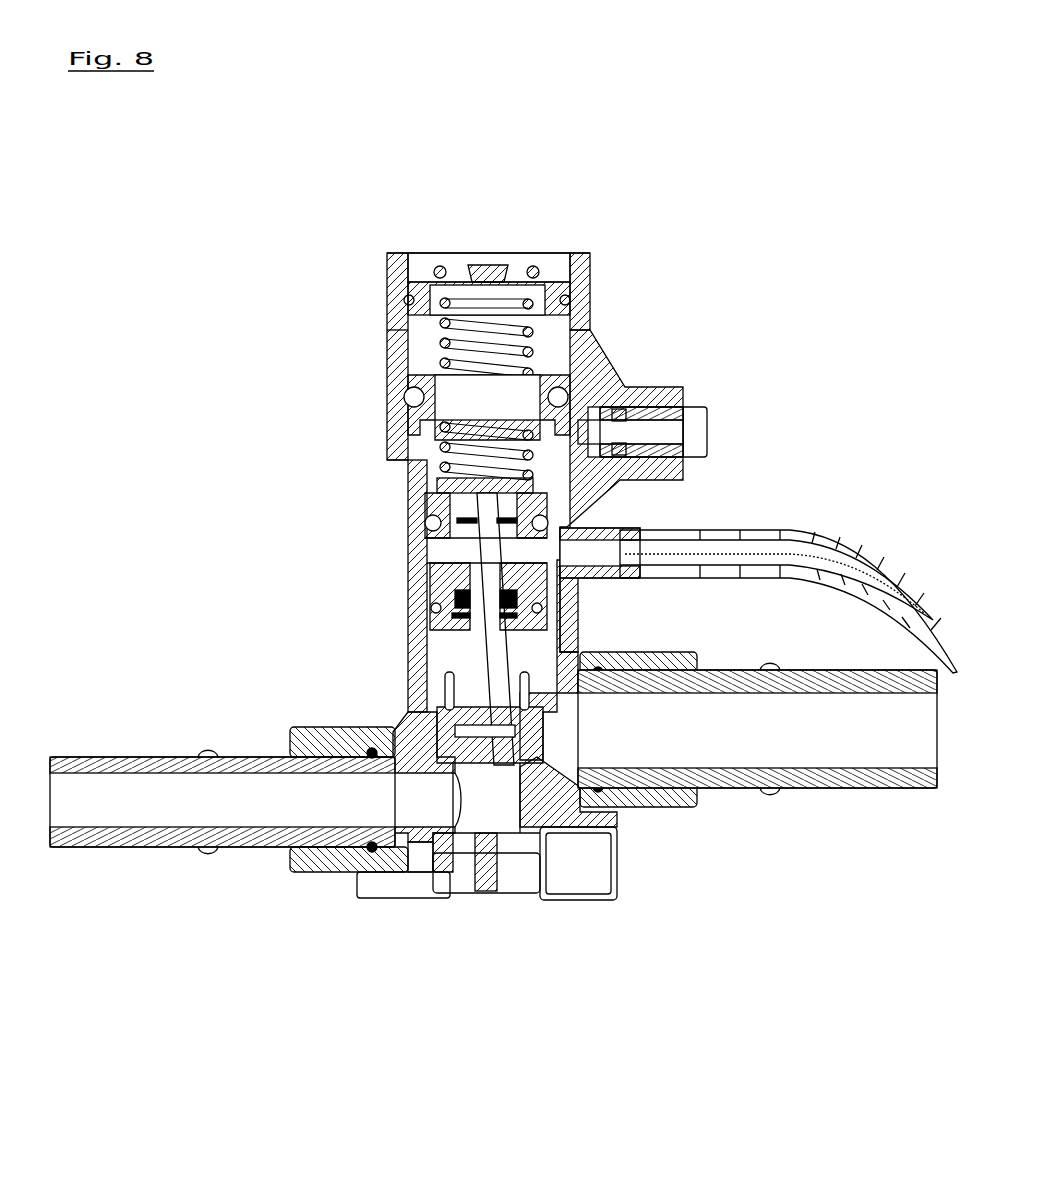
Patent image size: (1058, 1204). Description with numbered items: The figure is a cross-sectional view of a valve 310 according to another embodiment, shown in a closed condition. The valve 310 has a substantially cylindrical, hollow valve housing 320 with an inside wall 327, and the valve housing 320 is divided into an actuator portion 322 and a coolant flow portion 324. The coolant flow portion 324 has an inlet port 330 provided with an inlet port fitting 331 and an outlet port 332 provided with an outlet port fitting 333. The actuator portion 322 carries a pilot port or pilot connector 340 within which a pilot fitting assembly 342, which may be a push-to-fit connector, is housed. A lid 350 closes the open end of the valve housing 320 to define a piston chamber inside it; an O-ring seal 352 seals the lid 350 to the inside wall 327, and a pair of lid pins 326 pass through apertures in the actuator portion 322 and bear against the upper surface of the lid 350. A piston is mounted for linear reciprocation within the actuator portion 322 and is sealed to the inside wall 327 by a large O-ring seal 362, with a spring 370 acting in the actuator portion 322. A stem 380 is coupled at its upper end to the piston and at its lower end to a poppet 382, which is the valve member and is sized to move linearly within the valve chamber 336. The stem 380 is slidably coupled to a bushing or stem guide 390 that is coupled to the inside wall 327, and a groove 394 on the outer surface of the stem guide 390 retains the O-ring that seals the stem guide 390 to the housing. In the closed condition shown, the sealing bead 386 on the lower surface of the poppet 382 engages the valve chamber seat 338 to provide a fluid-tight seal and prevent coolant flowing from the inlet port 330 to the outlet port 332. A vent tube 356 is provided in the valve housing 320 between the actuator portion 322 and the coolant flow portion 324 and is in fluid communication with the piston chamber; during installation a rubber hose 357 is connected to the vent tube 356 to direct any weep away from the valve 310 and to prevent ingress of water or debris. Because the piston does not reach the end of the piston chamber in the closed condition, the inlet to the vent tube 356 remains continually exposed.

The valve 310 is at (786, 208).
The valve housing 320 is at (387, 437).
The actuator portion 322 is at (594, 342).
The coolant flow portion 324 is at (562, 632).
The lid pins 326 is at (434, 268).
The inside wall 327 is at (397, 328).
The inlet port 330 is at (697, 664).
The inlet port fitting 331 is at (865, 778).
The outlet port 332 is at (290, 862).
The outlet port fitting 333 is at (150, 834).
The valve chamber 336 is at (607, 787).
The valve chamber seat 338 is at (455, 765).
The pilot port 340 is at (683, 474).
The pilot fitting assembly 342 is at (690, 440).
The lid 350 is at (407, 300).
The O-ring seal 352 is at (399, 301).
The vent tube 356 is at (640, 534).
The rubber hose 357 is at (720, 535).
The large O-ring seal 362 is at (688, 397).
The spring 370 is at (588, 362).
The stem 380 is at (486, 551).
The poppet 382 is at (405, 717).
The sealing bead 386 is at (606, 865).
The stem guide 390 is at (423, 584).
The groove 394 is at (547, 612).